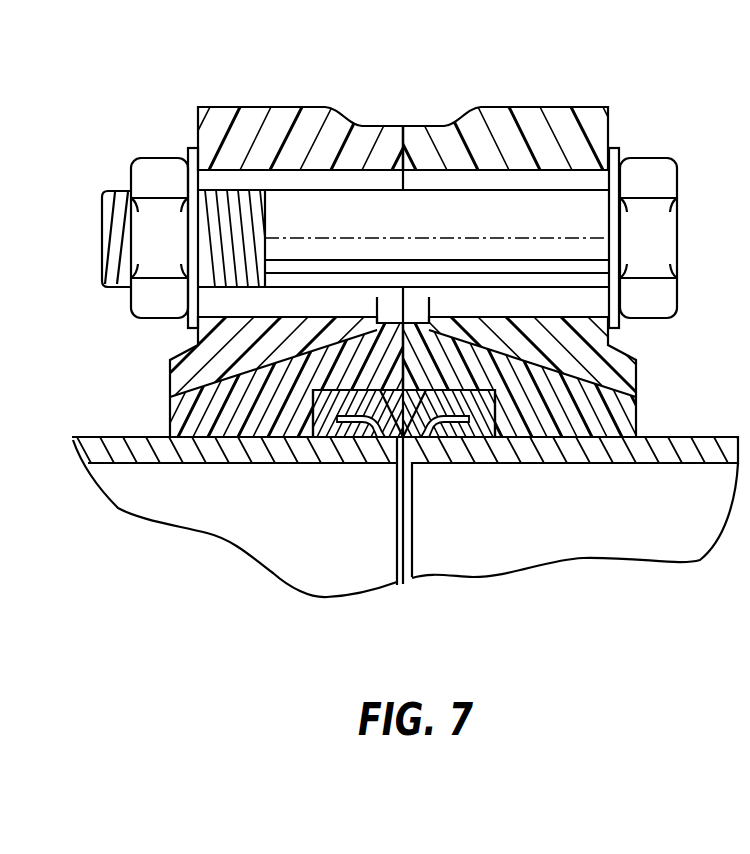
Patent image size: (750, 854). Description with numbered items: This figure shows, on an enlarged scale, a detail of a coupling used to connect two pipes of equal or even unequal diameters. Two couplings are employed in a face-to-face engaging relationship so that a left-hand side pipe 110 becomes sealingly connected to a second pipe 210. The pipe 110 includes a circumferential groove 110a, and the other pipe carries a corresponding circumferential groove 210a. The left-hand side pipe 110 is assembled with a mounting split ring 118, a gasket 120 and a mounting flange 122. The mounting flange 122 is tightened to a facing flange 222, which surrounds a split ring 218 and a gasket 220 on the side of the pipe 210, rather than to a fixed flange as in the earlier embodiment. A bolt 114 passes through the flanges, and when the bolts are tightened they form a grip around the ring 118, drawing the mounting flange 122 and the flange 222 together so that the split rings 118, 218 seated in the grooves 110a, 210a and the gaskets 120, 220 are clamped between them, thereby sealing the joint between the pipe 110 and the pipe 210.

The pipe 110 is at (190, 465).
The circumferential groove 110a is at (262, 437).
The bolt 114 is at (684, 191).
The mounting split ring 118 is at (170, 428).
The gasket 120 is at (345, 437).
The mounting flange 122 is at (282, 112).
The pipe 210 is at (707, 436).
The circumferential groove 210a is at (545, 439).
The split ring 218 is at (640, 415).
The gasket 220 is at (468, 440).
The flange 222 is at (500, 110).